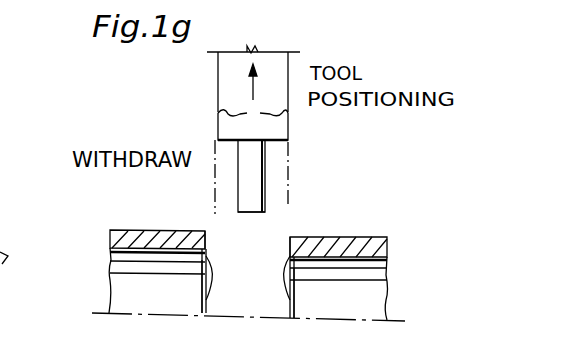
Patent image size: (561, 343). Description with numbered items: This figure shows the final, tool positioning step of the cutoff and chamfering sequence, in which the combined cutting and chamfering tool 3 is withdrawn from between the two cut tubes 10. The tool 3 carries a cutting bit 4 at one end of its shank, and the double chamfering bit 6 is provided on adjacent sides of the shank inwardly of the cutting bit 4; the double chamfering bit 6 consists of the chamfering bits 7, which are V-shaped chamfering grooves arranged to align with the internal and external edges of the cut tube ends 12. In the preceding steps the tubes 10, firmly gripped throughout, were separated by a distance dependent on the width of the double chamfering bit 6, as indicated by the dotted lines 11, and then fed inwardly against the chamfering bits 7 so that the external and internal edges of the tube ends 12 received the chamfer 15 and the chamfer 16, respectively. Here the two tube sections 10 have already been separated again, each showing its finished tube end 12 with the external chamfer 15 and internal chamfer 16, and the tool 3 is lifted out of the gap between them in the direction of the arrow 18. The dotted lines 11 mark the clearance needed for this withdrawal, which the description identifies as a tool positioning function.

The double chamfering bit 6 is at (220, 64).
The arrow 18 is at (256, 84).
The chamfering bits 7 is at (253, 120).
The combined cutting and chamfering tool 3 is at (250, 186).
The cutting bit 4 is at (244, 214).
The dotted lines 11 is at (216, 152).
The cut tubes 10 is at (130, 231).
The chamfer 15 is at (205, 232).
The chamfer 16 is at (206, 282).
The cut tube ends 12 is at (212, 250).